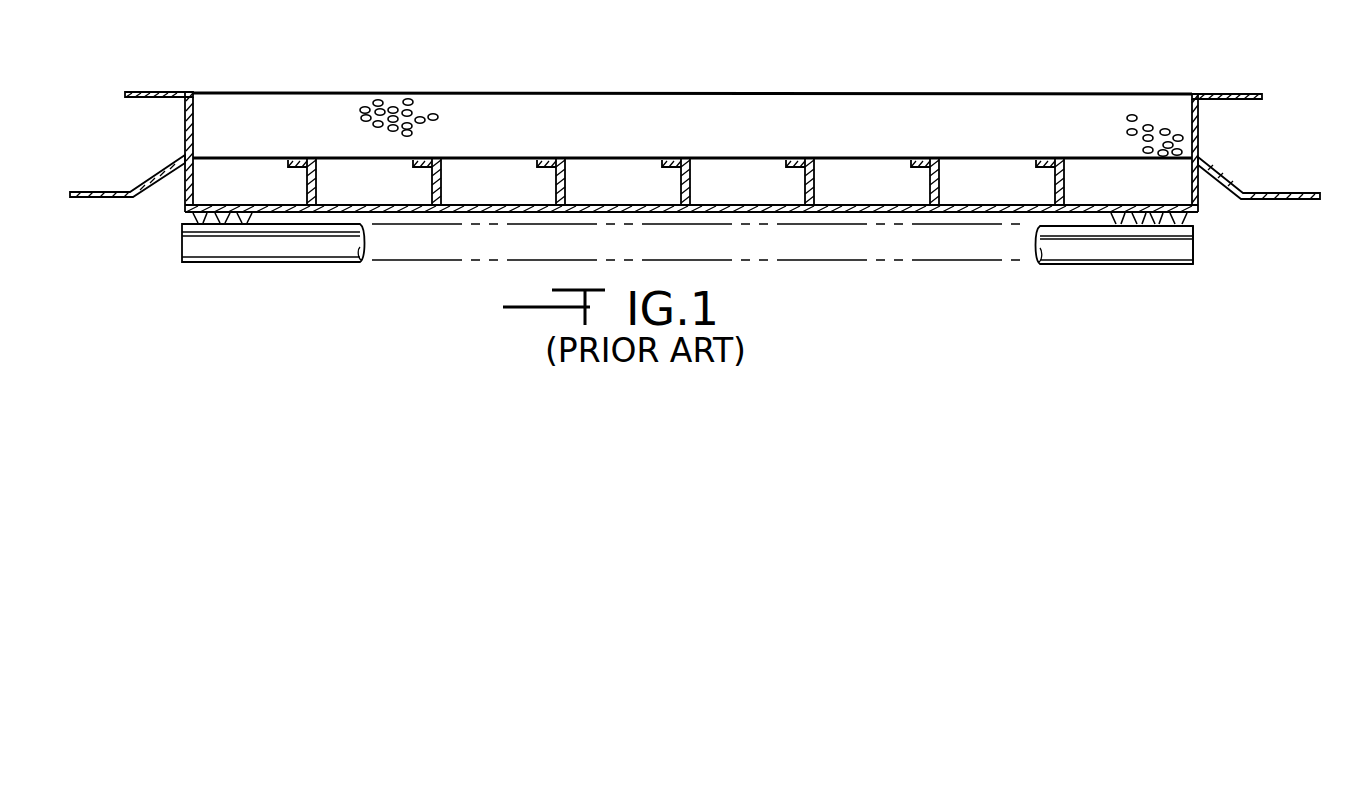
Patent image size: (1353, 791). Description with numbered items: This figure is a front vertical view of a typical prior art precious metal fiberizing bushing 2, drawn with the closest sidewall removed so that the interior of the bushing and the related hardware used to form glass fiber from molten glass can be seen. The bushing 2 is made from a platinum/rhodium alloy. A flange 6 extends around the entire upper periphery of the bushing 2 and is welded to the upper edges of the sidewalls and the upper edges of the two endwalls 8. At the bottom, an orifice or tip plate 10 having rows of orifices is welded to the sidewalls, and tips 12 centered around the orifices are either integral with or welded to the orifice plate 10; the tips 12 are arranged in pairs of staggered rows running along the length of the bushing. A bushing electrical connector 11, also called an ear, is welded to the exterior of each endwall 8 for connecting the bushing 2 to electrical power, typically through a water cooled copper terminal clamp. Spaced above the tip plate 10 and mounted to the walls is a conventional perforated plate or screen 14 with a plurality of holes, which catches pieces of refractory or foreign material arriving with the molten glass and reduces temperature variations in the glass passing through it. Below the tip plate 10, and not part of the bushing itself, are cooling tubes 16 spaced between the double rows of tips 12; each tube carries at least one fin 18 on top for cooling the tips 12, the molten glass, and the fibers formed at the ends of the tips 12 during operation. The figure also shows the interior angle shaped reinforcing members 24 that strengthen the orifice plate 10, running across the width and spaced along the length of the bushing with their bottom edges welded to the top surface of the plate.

The bushing 2 is at (893, 93).
The flange 6 is at (153, 90).
The endwall 8 is at (185, 128).
The orifice plate 10 is at (183, 197).
The bushing electrical connector 11 is at (107, 200).
The tips 12 is at (1193, 220).
The perforated plate 14 is at (448, 118).
The cooling tubes 16 is at (1167, 253).
The fin 18 is at (1198, 228).
The rib 24 is at (688, 185).